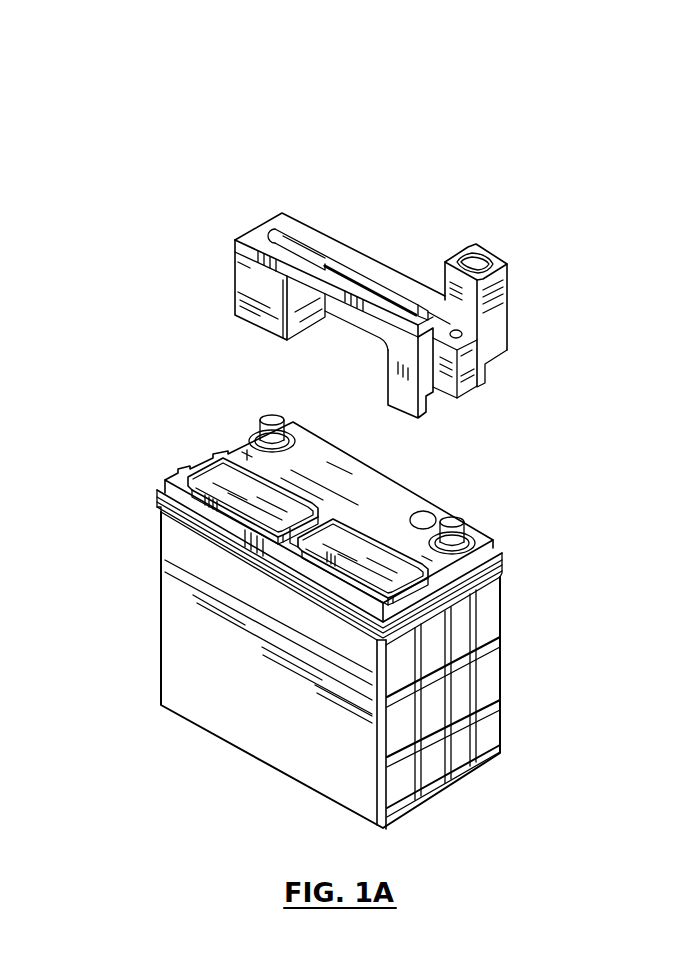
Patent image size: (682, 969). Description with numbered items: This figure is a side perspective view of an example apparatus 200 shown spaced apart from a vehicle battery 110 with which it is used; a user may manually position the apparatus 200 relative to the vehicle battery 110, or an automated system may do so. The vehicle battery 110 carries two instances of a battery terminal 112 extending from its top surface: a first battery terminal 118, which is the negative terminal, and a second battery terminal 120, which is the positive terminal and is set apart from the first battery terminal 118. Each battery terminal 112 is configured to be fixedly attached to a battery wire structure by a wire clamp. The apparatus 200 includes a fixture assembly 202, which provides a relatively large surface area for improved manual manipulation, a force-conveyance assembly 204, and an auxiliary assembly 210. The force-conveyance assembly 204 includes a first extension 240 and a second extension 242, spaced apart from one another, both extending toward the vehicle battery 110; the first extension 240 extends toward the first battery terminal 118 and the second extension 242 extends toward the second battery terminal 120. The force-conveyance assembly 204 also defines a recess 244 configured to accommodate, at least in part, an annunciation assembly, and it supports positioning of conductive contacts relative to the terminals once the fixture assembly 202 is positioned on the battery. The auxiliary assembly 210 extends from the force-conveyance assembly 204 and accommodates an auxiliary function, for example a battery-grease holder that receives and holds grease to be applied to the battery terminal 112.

The apparatus 200 is at (160, 88).
The fixture assembly 202 is at (255, 135).
The force-conveyance assembly 204 is at (292, 208).
The second extension 242 is at (240, 283).
The recess 244 is at (357, 273).
The auxiliary assembly 210 is at (488, 250).
The first extension 240 is at (406, 390).
The battery terminal 112 is at (170, 372).
The second battery terminal 120 is at (268, 414).
The first battery terminal 118 is at (452, 514).
The vehicle battery 110 is at (432, 798).